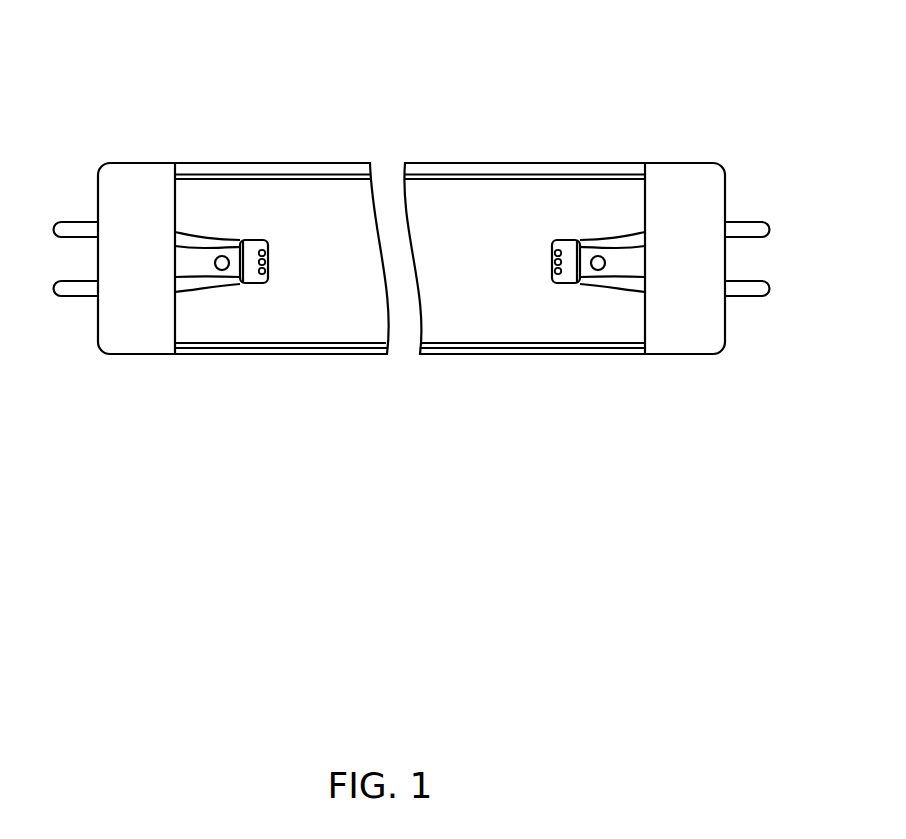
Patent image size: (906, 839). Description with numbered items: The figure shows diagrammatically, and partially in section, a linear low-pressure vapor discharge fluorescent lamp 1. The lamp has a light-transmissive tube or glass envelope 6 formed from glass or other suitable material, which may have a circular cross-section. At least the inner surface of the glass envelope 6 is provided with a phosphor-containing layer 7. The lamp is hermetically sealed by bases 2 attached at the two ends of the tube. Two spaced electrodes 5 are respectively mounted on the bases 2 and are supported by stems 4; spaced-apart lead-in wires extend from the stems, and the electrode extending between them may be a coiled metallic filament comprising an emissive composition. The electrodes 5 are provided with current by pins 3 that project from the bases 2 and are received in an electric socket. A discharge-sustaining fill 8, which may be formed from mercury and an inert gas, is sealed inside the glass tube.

The fluorescent lamp 1 is at (397, 271).
The base 2 is at (117, 356).
The pin 3 is at (75, 298).
The stem 4 is at (220, 290).
The electrode 5 is at (270, 258).
The glass envelope 6 is at (502, 357).
The phosphor-containing layer 7 is at (460, 345).
The discharge-sustaining fill 8 is at (305, 227).